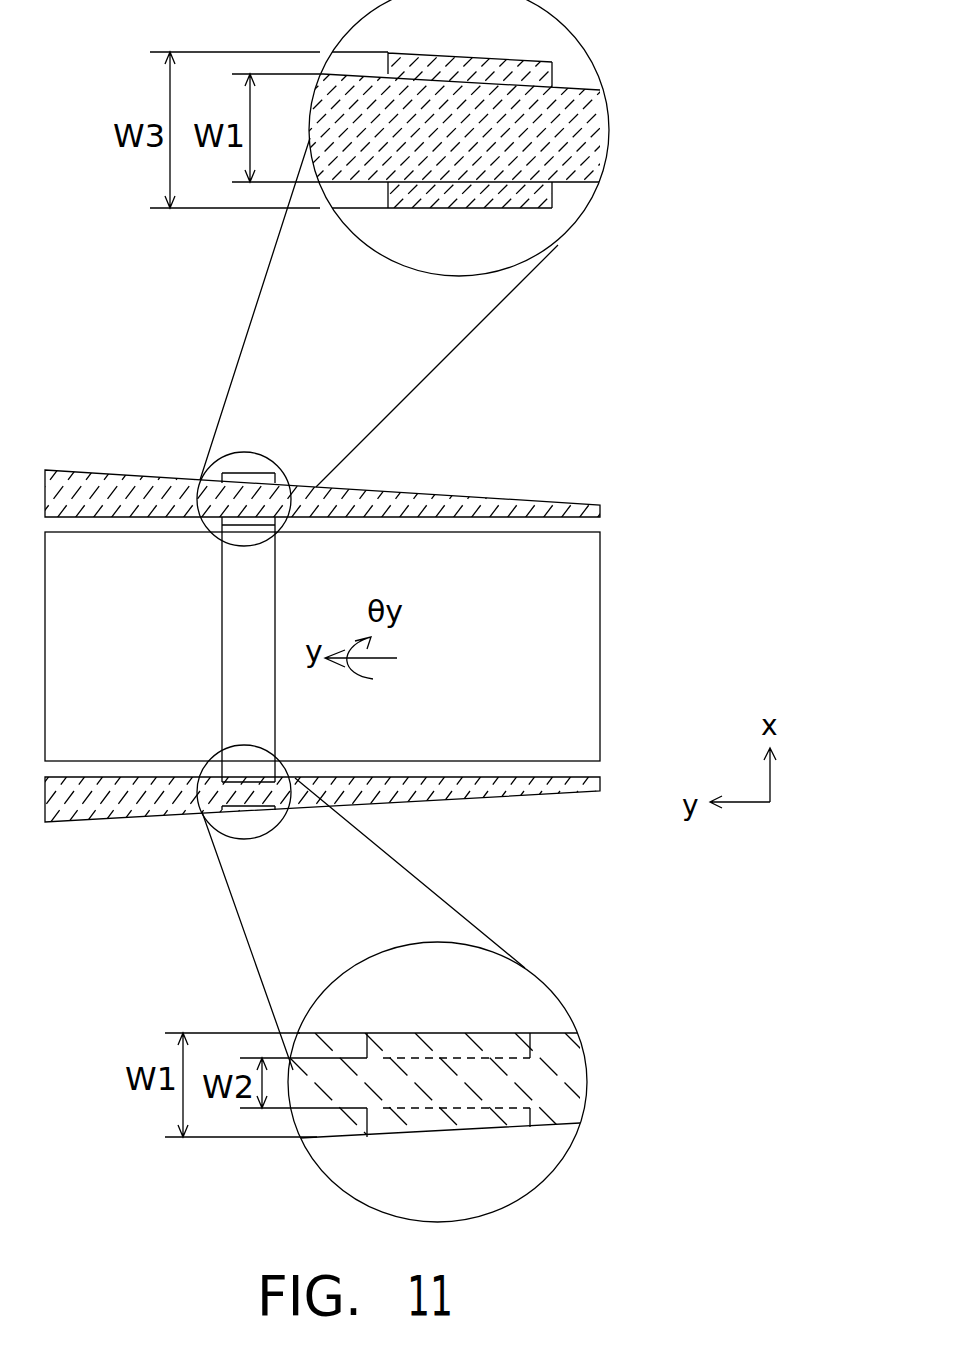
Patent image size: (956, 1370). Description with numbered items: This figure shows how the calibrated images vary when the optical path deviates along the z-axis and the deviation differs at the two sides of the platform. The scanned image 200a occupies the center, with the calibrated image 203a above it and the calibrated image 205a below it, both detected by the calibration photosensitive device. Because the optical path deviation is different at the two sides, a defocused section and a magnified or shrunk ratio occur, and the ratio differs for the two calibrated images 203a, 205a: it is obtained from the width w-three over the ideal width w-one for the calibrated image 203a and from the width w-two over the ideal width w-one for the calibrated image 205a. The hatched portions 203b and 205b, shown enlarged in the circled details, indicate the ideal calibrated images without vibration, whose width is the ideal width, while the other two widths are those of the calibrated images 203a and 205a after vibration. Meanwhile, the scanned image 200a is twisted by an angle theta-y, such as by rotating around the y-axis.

The scanned image 200a is at (562, 677).
The calibrated image 203a is at (468, 505).
The hatched portion 203b is at (264, 478).
The calibrated image 205a is at (472, 805).
The hatched portion 205b is at (267, 815).